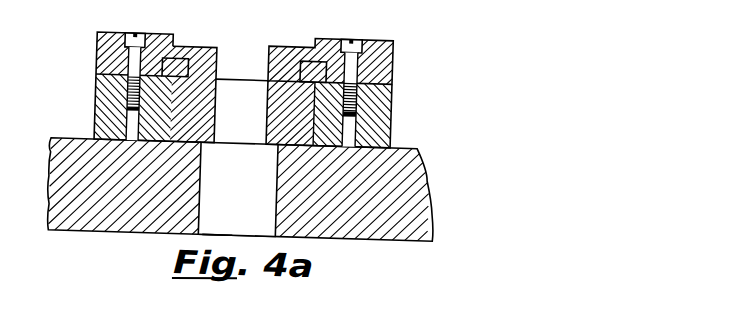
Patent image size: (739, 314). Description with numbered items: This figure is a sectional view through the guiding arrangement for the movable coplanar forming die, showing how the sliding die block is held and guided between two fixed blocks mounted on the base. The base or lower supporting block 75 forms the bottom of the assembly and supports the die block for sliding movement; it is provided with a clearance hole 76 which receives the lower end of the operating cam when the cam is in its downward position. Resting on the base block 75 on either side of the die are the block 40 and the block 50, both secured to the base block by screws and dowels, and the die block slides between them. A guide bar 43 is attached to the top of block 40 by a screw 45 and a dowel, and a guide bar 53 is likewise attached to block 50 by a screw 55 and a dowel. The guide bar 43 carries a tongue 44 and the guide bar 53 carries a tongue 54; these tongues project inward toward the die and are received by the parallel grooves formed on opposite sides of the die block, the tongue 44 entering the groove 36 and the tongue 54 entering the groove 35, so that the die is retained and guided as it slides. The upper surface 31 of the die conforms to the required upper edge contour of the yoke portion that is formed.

The surface 31 is at (242, 128).
The groove 35 is at (296, 71).
The groove 36 is at (185, 58).
The block 40 is at (99, 99).
The guide bar 43 is at (94, 47).
The tongue 44 is at (175, 58).
The screw 45 is at (140, 34).
The block 50 is at (385, 117).
The guide bar 53 is at (383, 54).
The tongue 54 is at (305, 56).
The screw 55 is at (358, 34).
The base block 75 is at (424, 211).
The clearance hole 76 is at (214, 213).